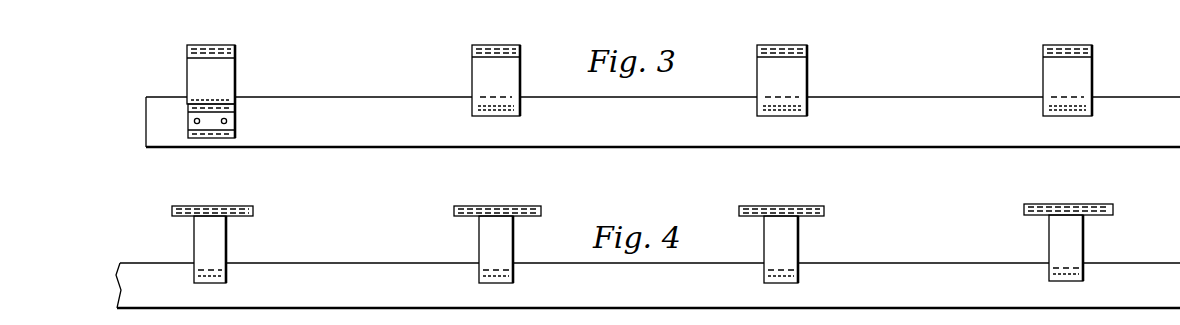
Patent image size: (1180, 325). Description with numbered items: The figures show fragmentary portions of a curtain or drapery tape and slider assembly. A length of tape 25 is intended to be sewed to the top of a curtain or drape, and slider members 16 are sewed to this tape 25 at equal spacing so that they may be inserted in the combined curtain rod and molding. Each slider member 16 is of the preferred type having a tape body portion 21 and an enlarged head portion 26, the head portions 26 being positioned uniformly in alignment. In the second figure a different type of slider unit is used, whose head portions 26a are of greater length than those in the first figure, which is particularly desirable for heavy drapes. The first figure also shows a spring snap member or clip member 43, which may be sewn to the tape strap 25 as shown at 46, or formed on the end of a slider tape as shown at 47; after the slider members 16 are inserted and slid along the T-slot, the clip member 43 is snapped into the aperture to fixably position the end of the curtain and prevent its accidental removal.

In FIG. 3, the slider member 16 is at (782, 73).
In FIG. 4, the slider member 16 is at (480, 205).
In FIG. 4, the tape body portion 21 is at (206, 238).
In FIG. 3, the tape 25 is at (663, 122).
In FIG. 4, the tape 25 is at (648, 285).
In FIG. 3, the enlarged head portion 26 is at (471, 53).
In FIG. 4, the enlarged head portion 26 is at (215, 249).
In FIG. 4, the head portion 26a is at (197, 205).
In FIG. 3, the spring snap member 43 is at (199, 110).
In FIG. 3, the clip member sewn to tape strap 46 is at (235, 121).
In FIG. 3, the clip member formed on end of slider tape 47 is at (231, 74).